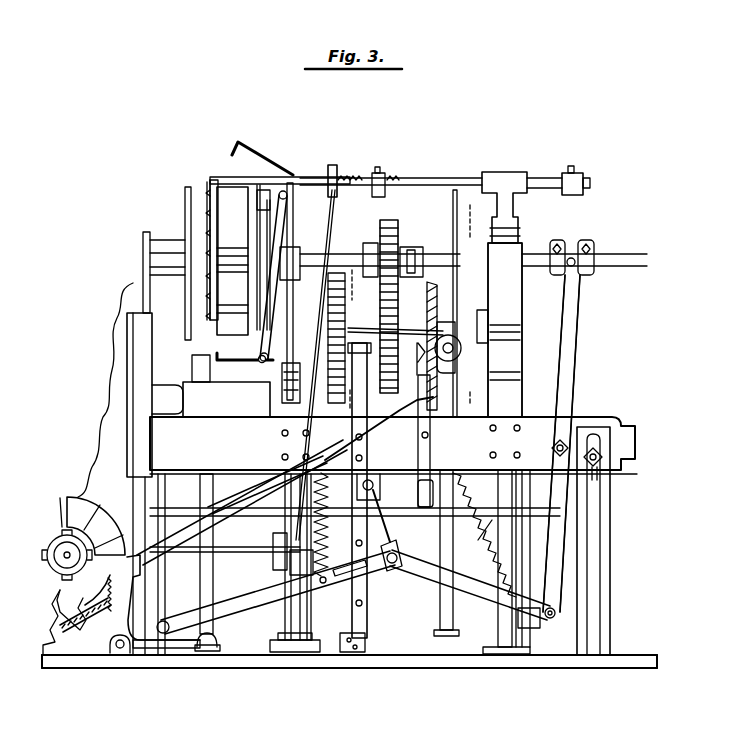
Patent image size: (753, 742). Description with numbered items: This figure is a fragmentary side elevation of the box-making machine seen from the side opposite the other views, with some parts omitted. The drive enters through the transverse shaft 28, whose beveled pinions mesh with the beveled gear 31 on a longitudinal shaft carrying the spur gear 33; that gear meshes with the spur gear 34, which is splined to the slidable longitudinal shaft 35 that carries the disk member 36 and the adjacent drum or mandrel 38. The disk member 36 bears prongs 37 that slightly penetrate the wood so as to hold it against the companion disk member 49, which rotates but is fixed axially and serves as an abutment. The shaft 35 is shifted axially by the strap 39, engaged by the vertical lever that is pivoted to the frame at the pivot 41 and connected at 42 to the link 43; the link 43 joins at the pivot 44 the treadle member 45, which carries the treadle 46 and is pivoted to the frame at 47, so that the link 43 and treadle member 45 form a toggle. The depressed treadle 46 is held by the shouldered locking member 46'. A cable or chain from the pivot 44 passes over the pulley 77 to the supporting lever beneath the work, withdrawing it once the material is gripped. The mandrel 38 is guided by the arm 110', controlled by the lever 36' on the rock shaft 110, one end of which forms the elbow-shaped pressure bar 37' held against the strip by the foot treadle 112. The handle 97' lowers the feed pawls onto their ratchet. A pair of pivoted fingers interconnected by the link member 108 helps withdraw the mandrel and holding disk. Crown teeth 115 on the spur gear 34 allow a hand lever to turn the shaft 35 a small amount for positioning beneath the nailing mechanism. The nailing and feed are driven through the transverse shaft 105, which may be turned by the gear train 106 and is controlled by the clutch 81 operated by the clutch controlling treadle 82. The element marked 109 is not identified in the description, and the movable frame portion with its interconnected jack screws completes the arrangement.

The transverse shaft 28 is at (452, 350).
The beveled gear 31 is at (427, 295).
The spur gear 33 is at (351, 405).
The spur gear 34 is at (390, 222).
The longitudinal shaft 35 is at (535, 252).
The disk member 36 is at (189, 250).
The lever 36' is at (391, 172).
The prongs 37 is at (184, 233).
The pressure bar 37' is at (188, 220).
The mandrel 38 is at (230, 205).
The strap 39 is at (594, 256).
The pivot 41 is at (568, 440).
The connection 42 is at (549, 618).
The link 43 is at (486, 600).
The pivot 44 is at (395, 566).
The treadle member 45 is at (246, 610).
The treadle 46 is at (370, 573).
The shouldered locking member 46' is at (370, 635).
The pivot 47 is at (163, 632).
The companion disk member 49 is at (185, 205).
The pulley 77 is at (380, 484).
The clutch 81 is at (60, 542).
The clutch controlling treadle 82 is at (212, 652).
The handle 97' is at (356, 285).
The transverse shaft 105 is at (65, 556).
The gear train 106 is at (80, 625).
The link member 108 is at (268, 284).
The hook 109 is at (234, 150).
The rock shaft 110 is at (558, 170).
The arm 110' is at (246, 218).
The treadle 112 is at (296, 655).
The crown teeth 115 is at (403, 248).